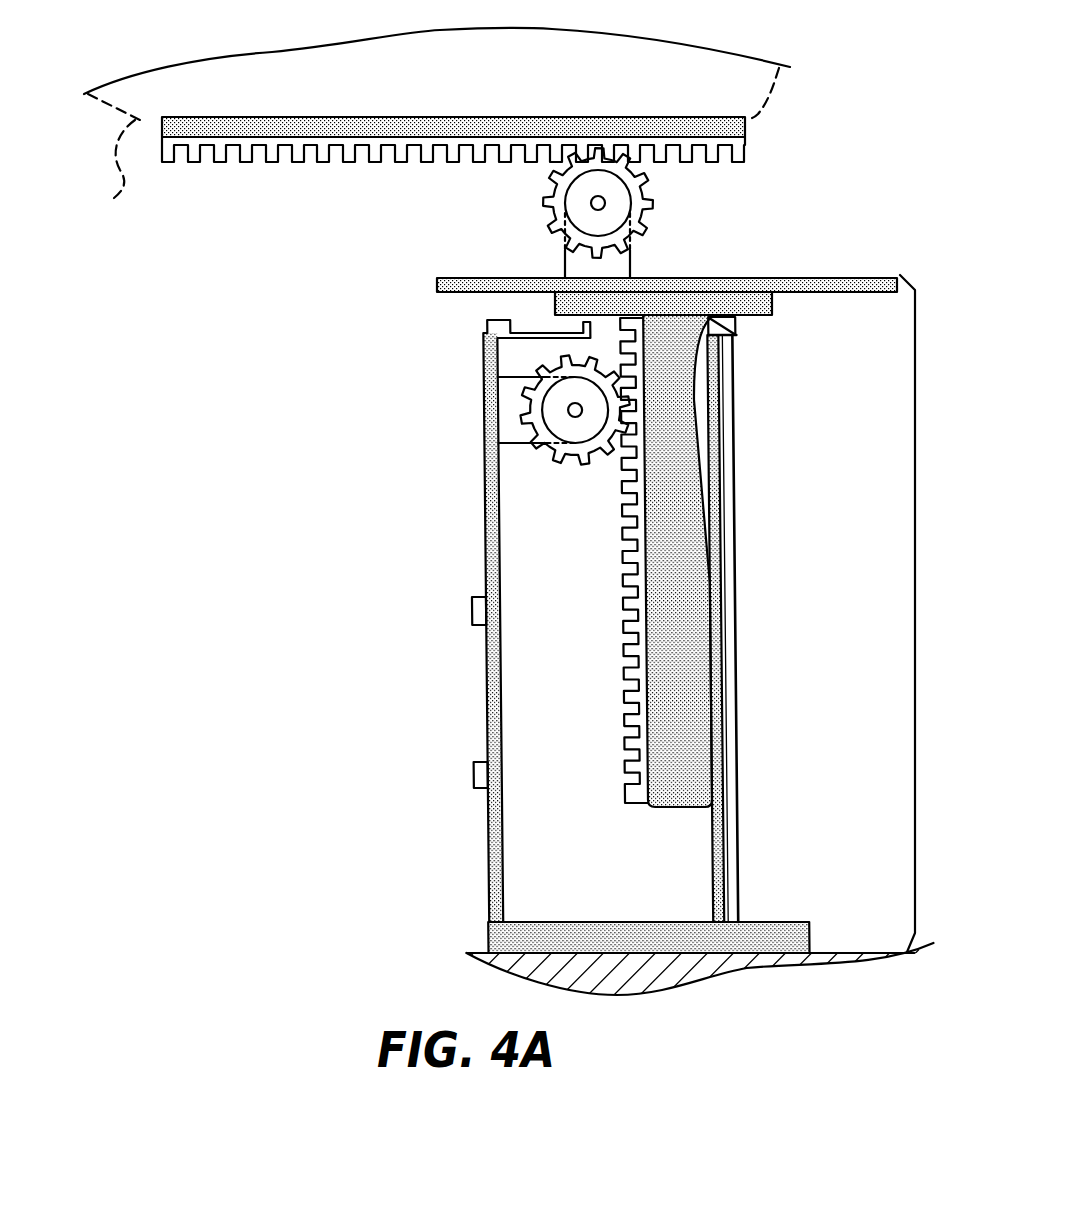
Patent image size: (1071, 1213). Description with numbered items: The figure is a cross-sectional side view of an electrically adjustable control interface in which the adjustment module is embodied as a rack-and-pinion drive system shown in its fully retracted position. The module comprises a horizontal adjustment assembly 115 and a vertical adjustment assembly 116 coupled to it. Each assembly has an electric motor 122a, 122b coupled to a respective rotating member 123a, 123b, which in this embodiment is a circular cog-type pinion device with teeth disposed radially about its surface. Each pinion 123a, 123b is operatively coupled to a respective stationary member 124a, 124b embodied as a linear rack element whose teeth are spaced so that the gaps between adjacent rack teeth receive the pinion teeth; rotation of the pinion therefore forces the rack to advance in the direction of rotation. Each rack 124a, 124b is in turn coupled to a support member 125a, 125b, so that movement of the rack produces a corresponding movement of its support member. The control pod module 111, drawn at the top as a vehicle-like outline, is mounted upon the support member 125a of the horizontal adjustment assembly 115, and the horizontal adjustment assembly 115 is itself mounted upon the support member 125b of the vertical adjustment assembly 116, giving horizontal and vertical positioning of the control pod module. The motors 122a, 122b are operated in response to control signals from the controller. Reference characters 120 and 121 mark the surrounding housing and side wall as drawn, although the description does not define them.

The control pod module 111 is at (433, 116).
The horizontal adjustment assembly 115 is at (399, 264).
The vertical adjustment assembly 116 is at (422, 578).
The housing 120 is at (915, 590).
The side wall 121 is at (483, 694).
The electric motor 122a is at (560, 255).
The electric motor 122b is at (497, 450).
The rotating member 123a is at (548, 203).
The rotating member 123b is at (540, 452).
The stationary member 124a is at (746, 152).
The stationary member 124b is at (640, 490).
The support member 125a is at (416, 124).
The support member 125b is at (672, 398).